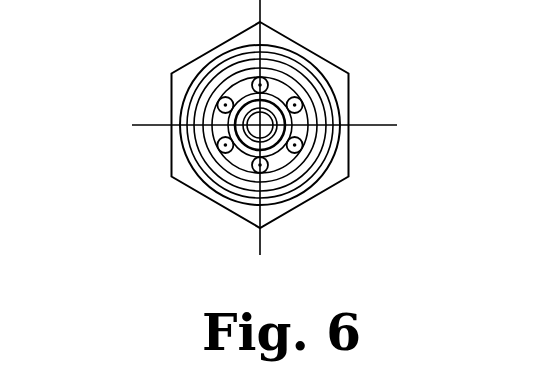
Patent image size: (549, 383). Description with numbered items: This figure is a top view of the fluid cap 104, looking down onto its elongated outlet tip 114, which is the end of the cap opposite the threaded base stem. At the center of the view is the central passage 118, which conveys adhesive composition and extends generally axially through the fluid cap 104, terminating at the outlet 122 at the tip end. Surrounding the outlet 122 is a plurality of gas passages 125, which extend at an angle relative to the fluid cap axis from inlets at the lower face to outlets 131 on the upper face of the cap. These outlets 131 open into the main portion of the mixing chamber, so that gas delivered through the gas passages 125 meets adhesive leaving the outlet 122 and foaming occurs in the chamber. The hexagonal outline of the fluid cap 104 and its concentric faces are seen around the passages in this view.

The fluid cap 104 is at (117, 193).
The elongated outlet tip 114 is at (300, 204).
The central passage 118 is at (276, 112).
The outlet 122 is at (284, 118).
The gas passages 125 is at (302, 143).
The outlets 131 is at (206, 180).